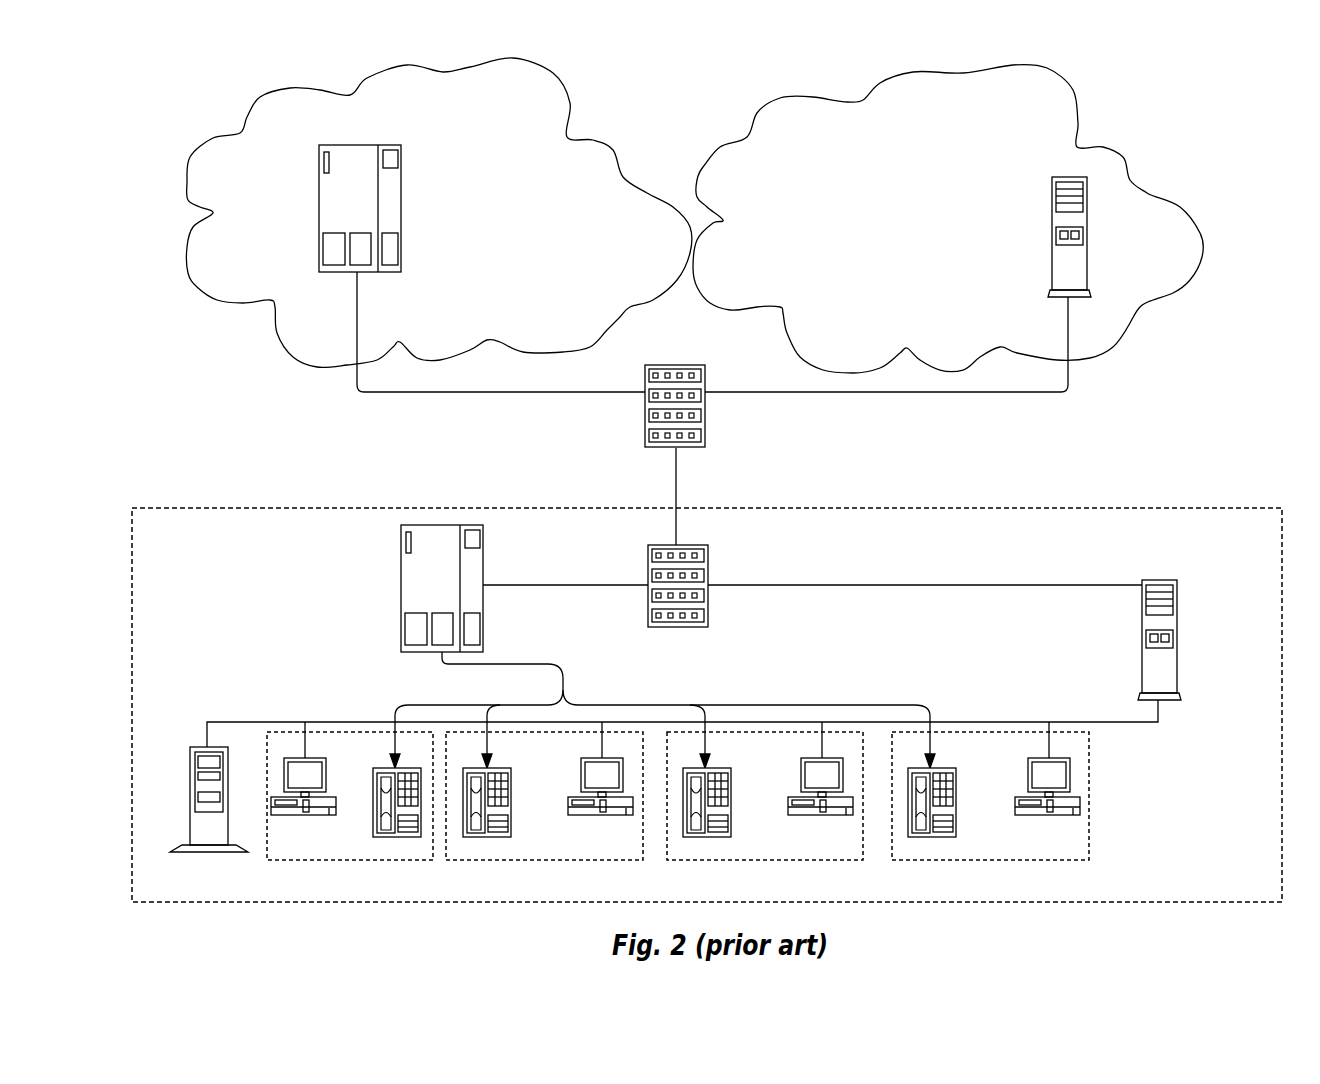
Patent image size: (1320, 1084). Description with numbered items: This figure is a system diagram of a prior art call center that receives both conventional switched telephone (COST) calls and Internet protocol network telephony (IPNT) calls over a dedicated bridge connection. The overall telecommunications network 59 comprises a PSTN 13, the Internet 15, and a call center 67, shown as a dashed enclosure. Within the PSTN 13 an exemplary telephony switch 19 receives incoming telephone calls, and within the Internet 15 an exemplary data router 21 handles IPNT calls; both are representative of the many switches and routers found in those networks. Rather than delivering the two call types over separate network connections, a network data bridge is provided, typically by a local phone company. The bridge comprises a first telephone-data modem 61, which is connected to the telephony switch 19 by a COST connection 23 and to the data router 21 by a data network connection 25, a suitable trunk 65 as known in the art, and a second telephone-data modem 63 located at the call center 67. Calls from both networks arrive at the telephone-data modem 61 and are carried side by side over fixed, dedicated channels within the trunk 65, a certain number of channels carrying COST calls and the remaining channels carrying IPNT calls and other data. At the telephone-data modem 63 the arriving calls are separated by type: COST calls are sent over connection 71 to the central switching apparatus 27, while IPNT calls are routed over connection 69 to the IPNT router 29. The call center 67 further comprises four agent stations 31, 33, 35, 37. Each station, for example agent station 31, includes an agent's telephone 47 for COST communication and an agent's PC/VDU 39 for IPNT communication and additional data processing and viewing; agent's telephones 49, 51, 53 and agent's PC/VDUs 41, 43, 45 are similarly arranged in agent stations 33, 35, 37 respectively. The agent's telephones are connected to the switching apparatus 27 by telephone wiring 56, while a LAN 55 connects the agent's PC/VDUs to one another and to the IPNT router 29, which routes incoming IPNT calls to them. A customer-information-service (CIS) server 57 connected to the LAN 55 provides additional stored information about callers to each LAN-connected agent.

The PSTN 13 is at (208, 137).
The Internet 15 is at (1127, 155).
The telephony switch 19 is at (319, 220).
The data router 21 is at (1052, 247).
The COST network connection 23 is at (357, 330).
The data-network connection 25 is at (1068, 343).
The central switching apparatus 27 is at (401, 603).
The IPNT router 29 is at (1177, 605).
The agent station 31 is at (357, 860).
The agent station 33 is at (585, 860).
The agent station 35 is at (785, 860).
The agent station 37 is at (1020, 860).
The agent's PC/VDU 39 is at (330, 815).
The agent's PC/VDU 41 is at (575, 815).
The agent's PC/VDU 43 is at (795, 815).
The agent's PC/VDU 45 is at (1022, 815).
The agent's telephone 47 is at (373, 800).
The agent's telephone 49 is at (512, 800).
The agent's telephone 51 is at (732, 805).
The agent's telephone 53 is at (957, 800).
The LAN 55 is at (355, 720).
The telephone wiring 56 is at (725, 705).
The customer-information-service (CIS) server 57 is at (190, 787).
The telecommunications network 59 is at (660, 128).
The first telephone-data modem 61 is at (705, 407).
The second telephone-data modem 63 is at (708, 597).
The trunk 65 is at (676, 522).
The call center 67 is at (1073, 500).
The connection 69 is at (997, 587).
The connection 71 is at (572, 585).